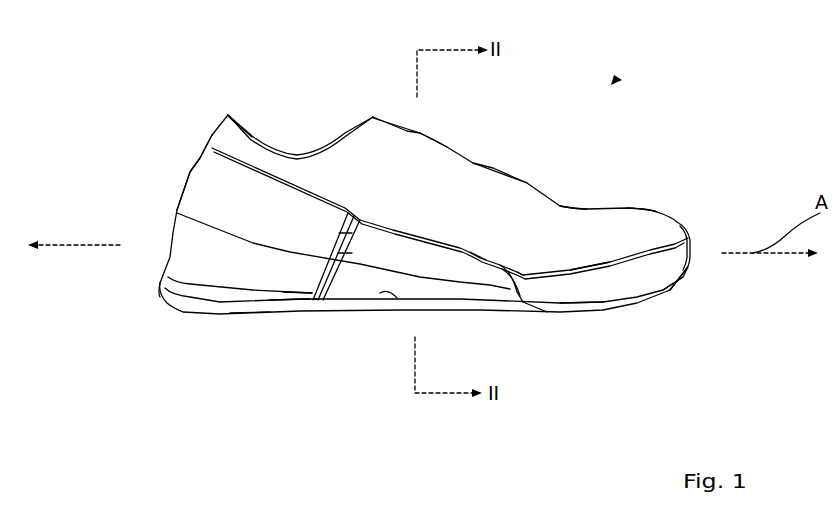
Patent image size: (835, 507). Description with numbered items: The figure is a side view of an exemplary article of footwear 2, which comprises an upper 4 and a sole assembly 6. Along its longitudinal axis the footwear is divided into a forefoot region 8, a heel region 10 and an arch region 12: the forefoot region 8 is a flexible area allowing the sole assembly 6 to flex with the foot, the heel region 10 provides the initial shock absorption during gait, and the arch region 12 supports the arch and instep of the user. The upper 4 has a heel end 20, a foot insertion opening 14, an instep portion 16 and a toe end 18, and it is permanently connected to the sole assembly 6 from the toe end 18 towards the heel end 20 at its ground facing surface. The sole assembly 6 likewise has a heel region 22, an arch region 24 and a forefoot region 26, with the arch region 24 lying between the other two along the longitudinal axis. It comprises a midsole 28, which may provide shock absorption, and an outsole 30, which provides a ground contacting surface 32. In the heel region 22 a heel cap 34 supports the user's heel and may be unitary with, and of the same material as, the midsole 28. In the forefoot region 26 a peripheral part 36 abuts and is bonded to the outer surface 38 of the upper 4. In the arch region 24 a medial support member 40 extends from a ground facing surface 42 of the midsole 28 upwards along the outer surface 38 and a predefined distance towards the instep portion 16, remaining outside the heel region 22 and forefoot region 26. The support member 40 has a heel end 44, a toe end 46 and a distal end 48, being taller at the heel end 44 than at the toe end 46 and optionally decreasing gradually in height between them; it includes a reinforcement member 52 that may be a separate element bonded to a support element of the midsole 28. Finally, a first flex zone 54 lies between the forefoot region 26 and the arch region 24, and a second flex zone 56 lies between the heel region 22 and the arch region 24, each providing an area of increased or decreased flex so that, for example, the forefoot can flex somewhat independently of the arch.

The article of footwear 2 is at (616, 82).
The upper 4 is at (420, 132).
The sole assembly 6 is at (622, 273).
The forefoot region 8 is at (588, 212).
The heel region 10 is at (197, 200).
The arch region 12 is at (473, 187).
The foot insertion opening 14 is at (297, 150).
The instep portion 16 is at (447, 147).
The toe end 18 is at (652, 212).
The heel end 20 is at (220, 133).
The heel region 22 is at (203, 265).
The arch region 24 is at (438, 282).
The forefoot region 26 is at (677, 265).
The midsole 28 is at (293, 285).
The outsole 30 is at (253, 310).
The ground contacting surface 32 is at (547, 313).
The heel cap 34 is at (183, 243).
The peripheral part 36 is at (668, 277).
The outer surface 38 is at (580, 262).
The medial support member 40 is at (350, 285).
The ground facing surface 42 is at (393, 287).
The heel end 44 is at (314, 300).
The toe end 46 is at (523, 275).
The distal end 48 is at (478, 260).
The reinforcement member 52 is at (362, 283).
The first flex zone 54 is at (538, 303).
The second flex zone 56 is at (307, 292).